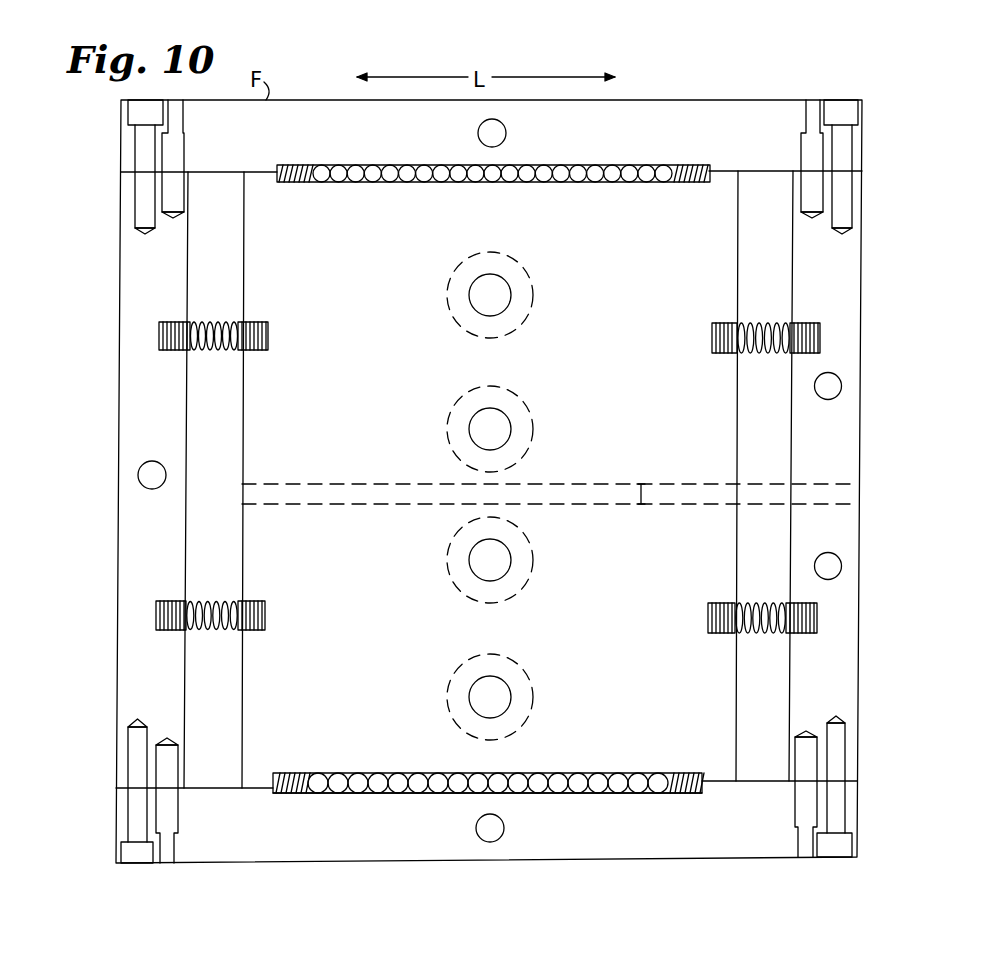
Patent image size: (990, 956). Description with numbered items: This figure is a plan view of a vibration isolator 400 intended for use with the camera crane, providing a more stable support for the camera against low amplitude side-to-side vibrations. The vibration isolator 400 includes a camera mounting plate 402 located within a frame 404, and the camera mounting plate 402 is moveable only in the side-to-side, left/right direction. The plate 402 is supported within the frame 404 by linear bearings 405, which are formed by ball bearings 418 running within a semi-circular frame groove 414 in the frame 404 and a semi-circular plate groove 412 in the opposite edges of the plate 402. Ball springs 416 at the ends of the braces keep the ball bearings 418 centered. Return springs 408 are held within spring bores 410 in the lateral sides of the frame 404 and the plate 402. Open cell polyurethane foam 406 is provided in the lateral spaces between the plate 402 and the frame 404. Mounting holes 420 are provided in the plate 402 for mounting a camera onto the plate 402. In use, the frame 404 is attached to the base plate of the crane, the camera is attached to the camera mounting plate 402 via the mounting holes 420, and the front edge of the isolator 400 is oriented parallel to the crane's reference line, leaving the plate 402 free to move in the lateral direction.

The vibration isolator 400 is at (872, 160).
The camera mounting plate 402 is at (717, 273).
The frame 404 is at (846, 676).
The linear bearings 405 is at (636, 158).
The open cell polyurethane foam 406 is at (205, 251).
The return springs 408 is at (491, 458).
The spring bores 410 is at (818, 322).
The semi-circular plate groove 412 is at (488, 779).
The semi-circular frame groove 414 is at (620, 793).
The ball springs 416 is at (300, 792).
The ball bearings 418 is at (576, 778).
The mounting holes 420 is at (490, 568).